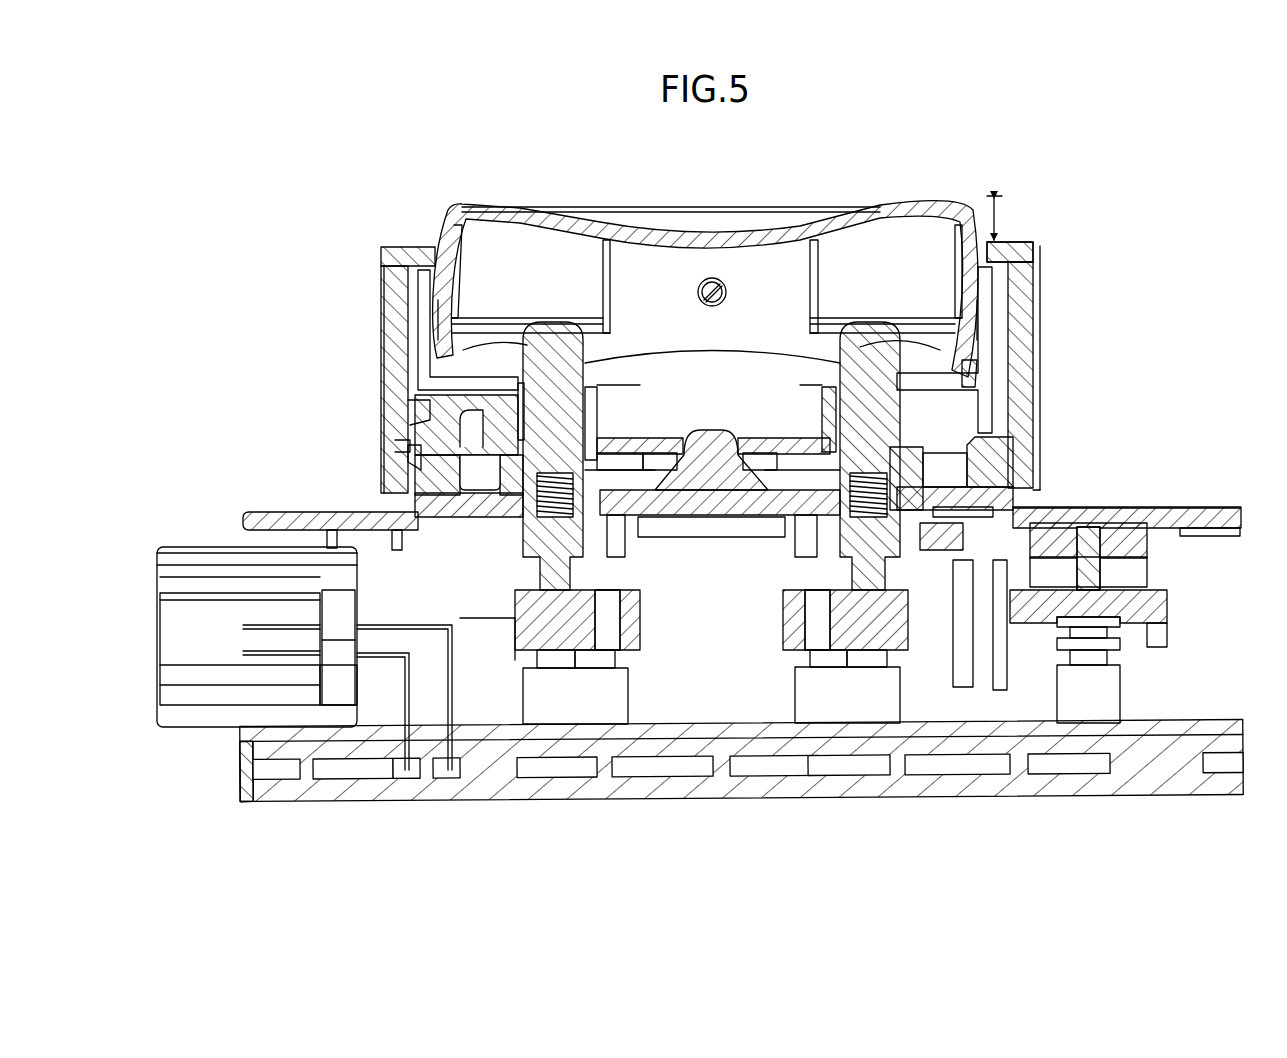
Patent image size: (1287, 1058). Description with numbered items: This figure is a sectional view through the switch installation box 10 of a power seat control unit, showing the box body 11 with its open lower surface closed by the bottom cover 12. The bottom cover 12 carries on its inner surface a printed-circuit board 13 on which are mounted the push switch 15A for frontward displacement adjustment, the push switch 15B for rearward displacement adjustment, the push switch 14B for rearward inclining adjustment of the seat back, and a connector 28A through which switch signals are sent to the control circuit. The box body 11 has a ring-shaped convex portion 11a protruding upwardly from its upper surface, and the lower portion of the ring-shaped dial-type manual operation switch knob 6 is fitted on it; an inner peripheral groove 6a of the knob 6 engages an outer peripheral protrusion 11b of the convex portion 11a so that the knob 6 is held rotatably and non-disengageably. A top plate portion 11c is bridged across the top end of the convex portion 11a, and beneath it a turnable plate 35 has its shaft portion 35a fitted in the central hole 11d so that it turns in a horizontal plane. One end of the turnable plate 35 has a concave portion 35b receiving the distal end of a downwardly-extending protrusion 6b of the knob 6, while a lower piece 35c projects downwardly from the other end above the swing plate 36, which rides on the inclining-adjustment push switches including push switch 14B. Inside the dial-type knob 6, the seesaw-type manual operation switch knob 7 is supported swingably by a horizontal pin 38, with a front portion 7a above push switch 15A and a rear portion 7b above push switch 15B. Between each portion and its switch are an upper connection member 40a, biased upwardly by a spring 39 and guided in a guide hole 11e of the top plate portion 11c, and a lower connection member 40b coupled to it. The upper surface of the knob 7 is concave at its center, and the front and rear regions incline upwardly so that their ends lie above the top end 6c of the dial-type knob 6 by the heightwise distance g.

The seesaw-type manual operation switch knob 7 is at (748, 238).
The front portion 7a is at (899, 212).
The rear portion 7b is at (512, 212).
The pin 38 is at (710, 280).
The dial-type manual operation switch knob 6 is at (1022, 260).
The inner peripheral groove 6a is at (405, 443).
The downwardly-extending protrusion 6b is at (410, 408).
The top end 6c is at (1020, 245).
The heightwise distance g is at (987, 232).
The switch installation box 10 is at (1168, 498).
The box body 11 is at (1082, 507).
The ring-shaped convex portion 11a is at (430, 503).
The outer peripheral protrusion 11b is at (403, 457).
The top plate portion 11c is at (632, 445).
The central hole 11d is at (700, 380).
The guide hole 11e is at (543, 395).
The bottom cover 12 is at (790, 798).
The printed-circuit board 13 is at (1218, 724).
The push switch 14B is at (1086, 700).
The push switch 15A is at (877, 700).
The push switch 15B is at (558, 703).
The connector 28A is at (200, 725).
The turnable plate 35 is at (767, 500).
The shaft portion 35a is at (710, 440).
The concave portion 35b is at (476, 495).
The lower piece 35c is at (1090, 558).
The swing plate 36 is at (1137, 607).
The spring 39 is at (615, 537).
The upper connection member 40a is at (547, 337).
The lower connection member 40b is at (577, 625).